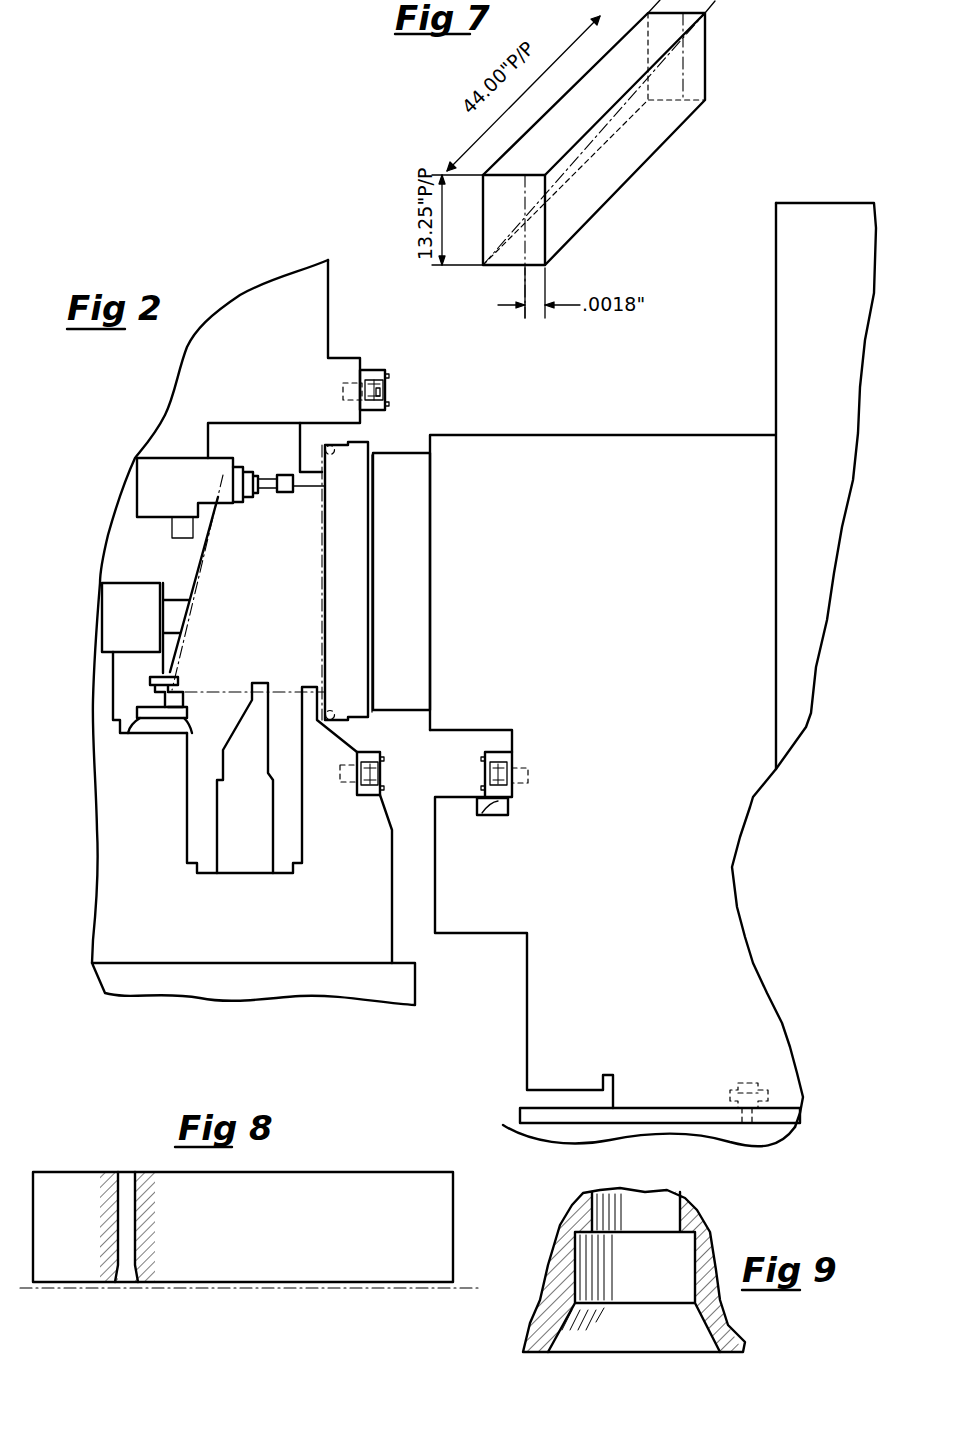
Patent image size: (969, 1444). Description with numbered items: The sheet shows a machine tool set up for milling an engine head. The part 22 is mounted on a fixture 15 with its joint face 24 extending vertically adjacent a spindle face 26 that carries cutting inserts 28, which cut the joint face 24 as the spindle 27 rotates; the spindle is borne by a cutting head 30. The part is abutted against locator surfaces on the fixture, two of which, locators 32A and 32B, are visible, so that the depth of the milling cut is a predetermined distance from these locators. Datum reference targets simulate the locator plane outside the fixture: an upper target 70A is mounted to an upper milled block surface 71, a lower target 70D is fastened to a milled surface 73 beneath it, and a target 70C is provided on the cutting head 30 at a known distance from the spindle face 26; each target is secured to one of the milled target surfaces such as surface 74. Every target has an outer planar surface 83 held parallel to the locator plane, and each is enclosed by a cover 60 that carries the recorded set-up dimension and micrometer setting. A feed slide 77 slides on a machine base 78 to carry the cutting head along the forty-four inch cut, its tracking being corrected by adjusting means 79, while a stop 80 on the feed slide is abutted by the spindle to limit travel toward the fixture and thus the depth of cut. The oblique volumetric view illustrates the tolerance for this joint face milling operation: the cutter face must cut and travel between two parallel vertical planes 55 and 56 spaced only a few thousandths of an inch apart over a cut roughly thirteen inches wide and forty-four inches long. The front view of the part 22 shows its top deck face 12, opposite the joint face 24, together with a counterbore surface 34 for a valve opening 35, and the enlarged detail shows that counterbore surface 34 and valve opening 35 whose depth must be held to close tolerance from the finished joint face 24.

In FIG. 8, the top deck face 12 is at (355, 1172).
In FIG. 2, the fixture 15 is at (330, 322).
In FIG. 8, the part 22 is at (455, 1220).
In FIG. 9, the part 22 is at (692, 1206).
In FIG. 2, the joint face 24 is at (322, 574).
In FIG. 8, the joint face 24 is at (278, 1282).
In FIG. 9, the joint face 24 is at (735, 1352).
In FIG. 2, the spindle face 26 is at (330, 472).
In FIG. 2, the spindle 27 is at (410, 601).
In FIG. 2, the cutting inserts 28 is at (325, 452).
In FIG. 2, the cutting head 30 is at (410, 549).
In FIG. 2, the locator surface 32A is at (258, 493).
In FIG. 2, the locator surface 32B is at (183, 677).
In FIG. 8, the counterbore surface 34 is at (140, 1262).
In FIG. 9, the counterbore surface 34 is at (700, 1234).
In FIG. 8, the valve opening 35 is at (122, 1283).
In FIG. 9, the valve opening 35 is at (640, 1340).
In FIG. 7, the vertical plane 55 is at (580, 80).
In FIG. 7, the vertical plane 56 is at (706, 34).
In FIG. 2, the cover 60 is at (376, 411).
In FIG. 2, the upper target 70A is at (389, 385).
In FIG. 2, the target 70C is at (488, 775).
In FIG. 2, the lower target 70D is at (383, 770).
In FIG. 2, the upper milled block surface 71 is at (366, 369).
In FIG. 2, the milled surface 73 is at (514, 766).
In FIG. 2, the milled target surface 74 is at (357, 796).
In FIG. 2, the feed slide 77 is at (614, 1097).
In FIG. 2, the machine base 78 is at (653, 1138).
In FIG. 2, the adjusting means 79 is at (768, 1094).
In FIG. 2, the stop 80 is at (491, 816).
In FIG. 2, the planar surface 83 is at (388, 397).